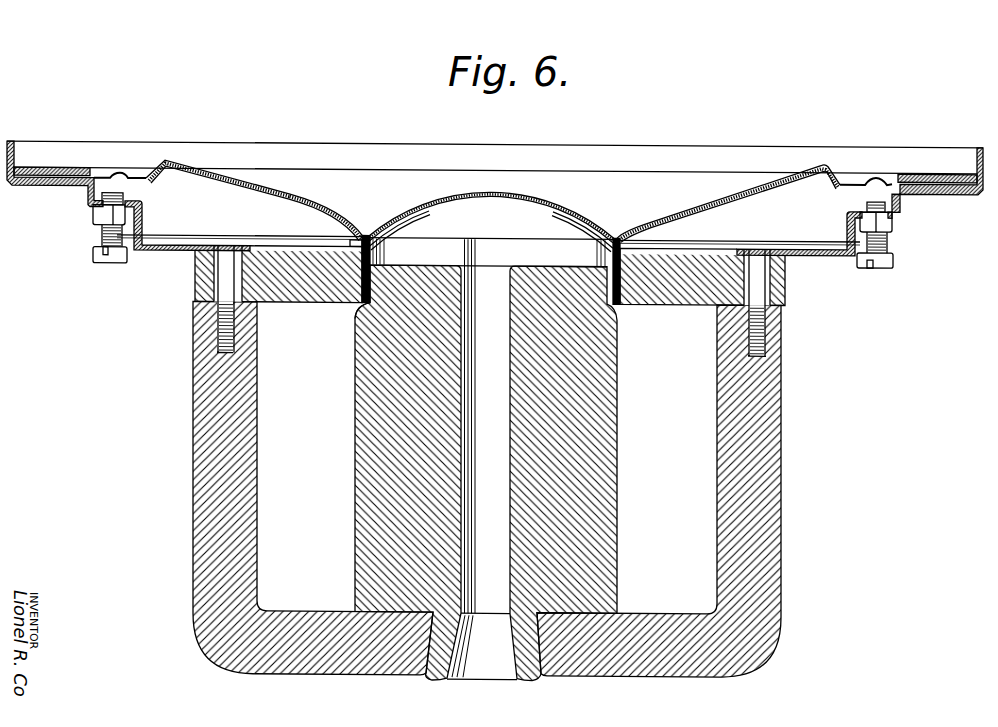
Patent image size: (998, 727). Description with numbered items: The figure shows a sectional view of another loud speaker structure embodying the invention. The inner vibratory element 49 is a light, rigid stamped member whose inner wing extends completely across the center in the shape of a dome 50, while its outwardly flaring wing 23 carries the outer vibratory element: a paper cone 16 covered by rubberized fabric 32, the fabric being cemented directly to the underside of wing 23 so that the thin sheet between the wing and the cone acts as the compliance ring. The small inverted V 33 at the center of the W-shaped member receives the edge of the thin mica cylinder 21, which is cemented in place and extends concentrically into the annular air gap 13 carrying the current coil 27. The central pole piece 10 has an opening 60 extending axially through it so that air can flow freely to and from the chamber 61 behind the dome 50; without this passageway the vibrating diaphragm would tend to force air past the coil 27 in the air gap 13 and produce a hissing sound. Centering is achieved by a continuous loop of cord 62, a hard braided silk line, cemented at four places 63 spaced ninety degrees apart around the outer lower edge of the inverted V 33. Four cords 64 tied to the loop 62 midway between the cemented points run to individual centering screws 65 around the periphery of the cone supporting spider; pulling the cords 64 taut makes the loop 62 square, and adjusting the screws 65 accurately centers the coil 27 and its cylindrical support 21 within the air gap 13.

The central pole piece 10 is at (587, 454).
The annular air gap 13 is at (620, 300).
The paper cone 16 is at (262, 188).
The mica cylinder 21 is at (491, 231).
The wing 23 is at (365, 232).
The current coil 27 is at (356, 304).
The rubberized fabric 32 is at (293, 194).
The inverted V 33 is at (372, 236).
The inner vibratory element 49 is at (613, 228).
The dome 50 is at (498, 188).
The opening 60 is at (482, 459).
The chamber 61 is at (491, 238).
The loop of cord 62 is at (344, 236).
The cemented places 63 is at (322, 233).
The cords 64 is at (185, 245).
The centering screws 65 is at (100, 232).